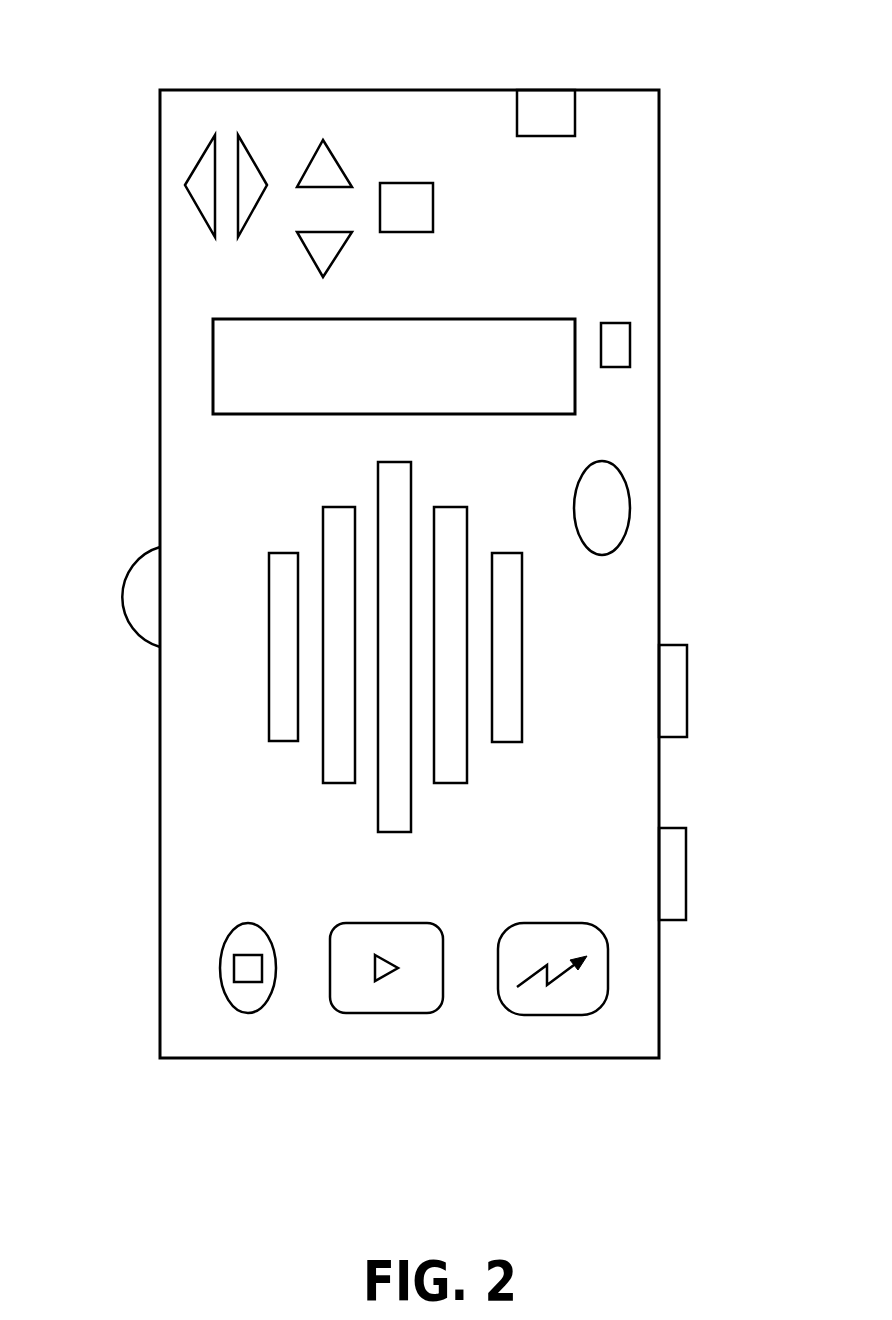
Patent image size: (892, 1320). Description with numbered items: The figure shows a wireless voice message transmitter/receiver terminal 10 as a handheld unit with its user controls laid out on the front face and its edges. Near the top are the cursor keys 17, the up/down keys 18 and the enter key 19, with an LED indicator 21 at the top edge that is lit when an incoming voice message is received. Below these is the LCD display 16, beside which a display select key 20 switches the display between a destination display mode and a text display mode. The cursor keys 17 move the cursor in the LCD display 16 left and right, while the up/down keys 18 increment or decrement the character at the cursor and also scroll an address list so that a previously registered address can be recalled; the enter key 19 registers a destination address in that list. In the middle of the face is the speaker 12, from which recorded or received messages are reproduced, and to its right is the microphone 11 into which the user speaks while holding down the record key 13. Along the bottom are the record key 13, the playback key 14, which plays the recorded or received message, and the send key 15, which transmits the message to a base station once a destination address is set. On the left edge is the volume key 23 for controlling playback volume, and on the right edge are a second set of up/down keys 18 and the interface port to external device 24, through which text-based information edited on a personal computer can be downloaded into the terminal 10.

The voice message transmitter/receiver terminal 10 is at (677, 1207).
The microphone 11 is at (630, 498).
The speaker 12 is at (288, 534).
The record key 13 is at (242, 926).
The playback key 14 is at (375, 1013).
The send key 15 is at (563, 923).
The LCD display 16 is at (500, 319).
The cursor keys 17 is at (187, 183).
The up/down keys 18 is at (320, 142).
The enter key 19 is at (433, 200).
The display select key 20 is at (630, 350).
The LED indicator 21 is at (545, 90).
The volume key 23 is at (128, 569).
The interface port to external device 24 is at (687, 898).